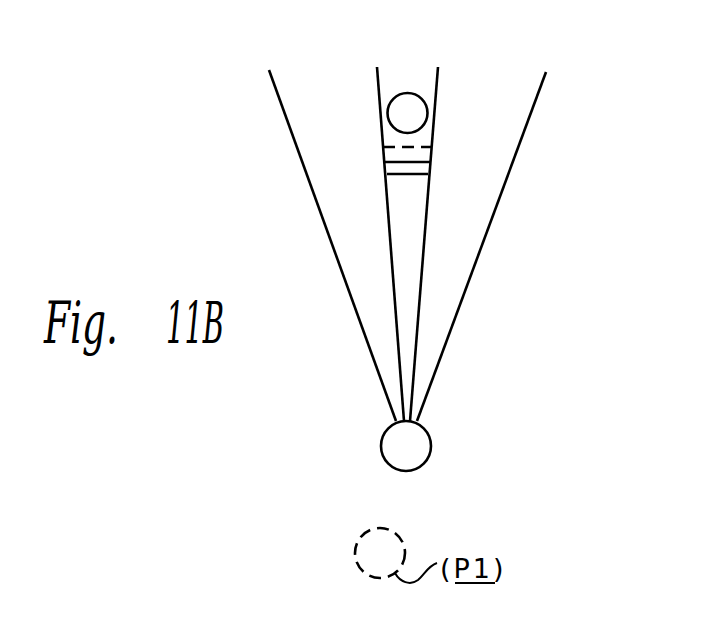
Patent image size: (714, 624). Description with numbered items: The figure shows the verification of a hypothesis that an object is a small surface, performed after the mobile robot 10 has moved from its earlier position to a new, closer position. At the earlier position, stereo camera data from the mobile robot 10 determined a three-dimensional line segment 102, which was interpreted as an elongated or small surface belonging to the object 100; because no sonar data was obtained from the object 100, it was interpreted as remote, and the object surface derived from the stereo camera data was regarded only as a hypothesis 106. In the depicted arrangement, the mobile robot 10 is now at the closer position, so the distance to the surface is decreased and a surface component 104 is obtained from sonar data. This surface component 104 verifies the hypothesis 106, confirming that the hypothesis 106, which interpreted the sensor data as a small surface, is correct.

The mobile robot 10 is at (587, 475).
The object 100 is at (416, 92).
The three-dimensional line segment 102 is at (399, 162).
The surface component 104 is at (410, 175).
The hypothesis 106 is at (422, 147).